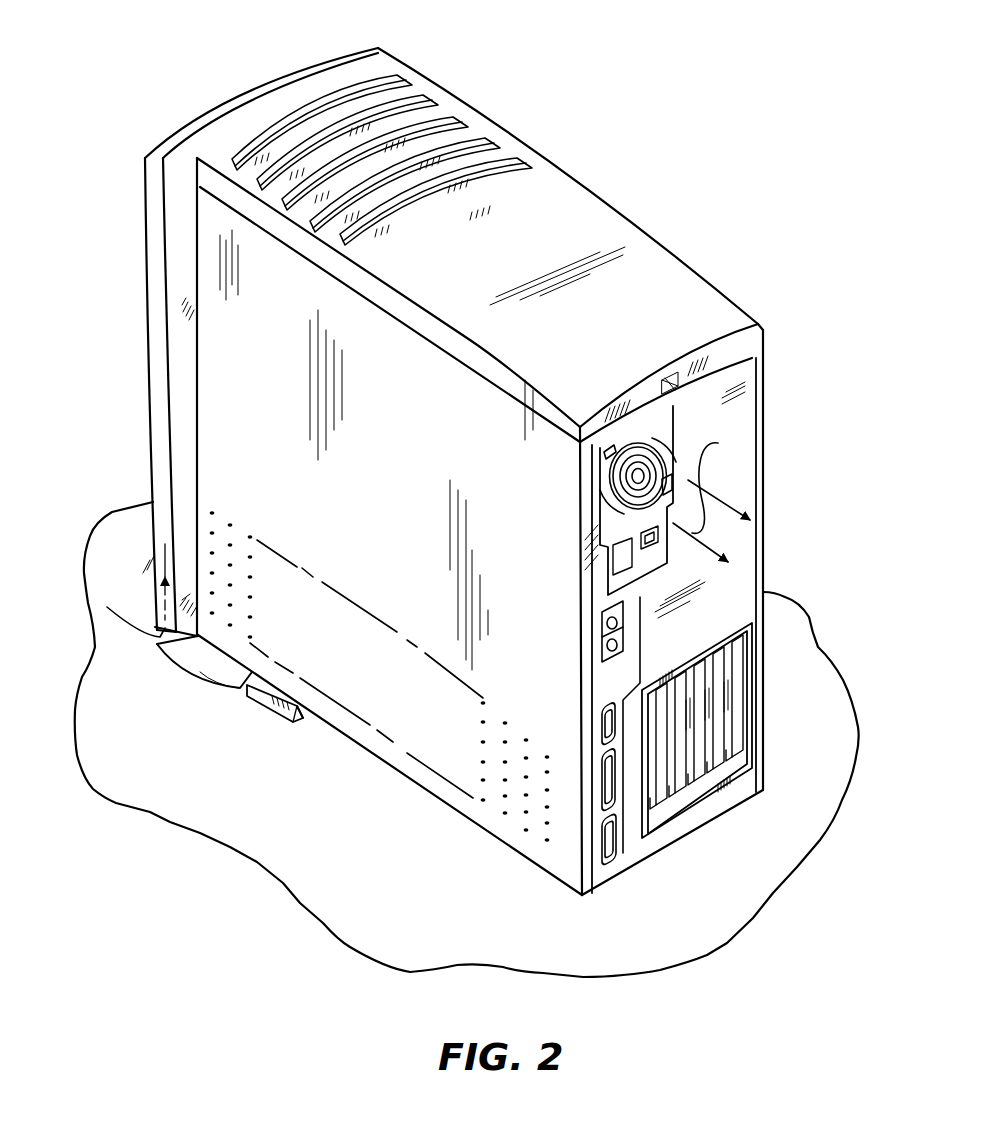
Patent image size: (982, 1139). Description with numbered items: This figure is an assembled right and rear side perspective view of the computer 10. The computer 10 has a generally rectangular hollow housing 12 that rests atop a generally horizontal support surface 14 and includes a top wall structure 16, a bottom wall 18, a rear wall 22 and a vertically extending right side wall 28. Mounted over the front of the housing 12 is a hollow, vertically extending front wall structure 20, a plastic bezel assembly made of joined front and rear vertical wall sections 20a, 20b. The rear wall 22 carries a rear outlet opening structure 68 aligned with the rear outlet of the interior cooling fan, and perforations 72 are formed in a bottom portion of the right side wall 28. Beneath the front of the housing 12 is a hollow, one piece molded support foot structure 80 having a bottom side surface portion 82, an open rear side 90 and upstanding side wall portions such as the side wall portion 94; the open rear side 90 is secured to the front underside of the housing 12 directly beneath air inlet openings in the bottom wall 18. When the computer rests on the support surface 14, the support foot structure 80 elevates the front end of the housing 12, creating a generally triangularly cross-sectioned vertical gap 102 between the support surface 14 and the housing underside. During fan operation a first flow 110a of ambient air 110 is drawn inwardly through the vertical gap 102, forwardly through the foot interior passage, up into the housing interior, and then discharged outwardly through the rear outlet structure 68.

The computer 10 is at (578, 99).
The housing 12 is at (609, 188).
The support surface 14 is at (413, 926).
The top wall structure 16 is at (673, 297).
The bottom wall 18 is at (468, 824).
The front wall structure 20 is at (139, 268).
The front vertical wall section 20a is at (157, 350).
The rear vertical wall section 20b is at (180, 381).
The rear wall 22 is at (748, 580).
The right side wall 28 is at (398, 451).
The rear outlet opening structure 68 is at (617, 474).
The perforations 72 is at (214, 512).
The support foot structure 80 is at (221, 691).
The bottom side surface portion 82 is at (278, 708).
The open rear side 90 is at (300, 722).
The side wall portion 94 is at (193, 660).
The vertical gap 102 is at (352, 751).
The ambient air 110 is at (716, 497).
The first flow of ambient air 110a is at (318, 724).